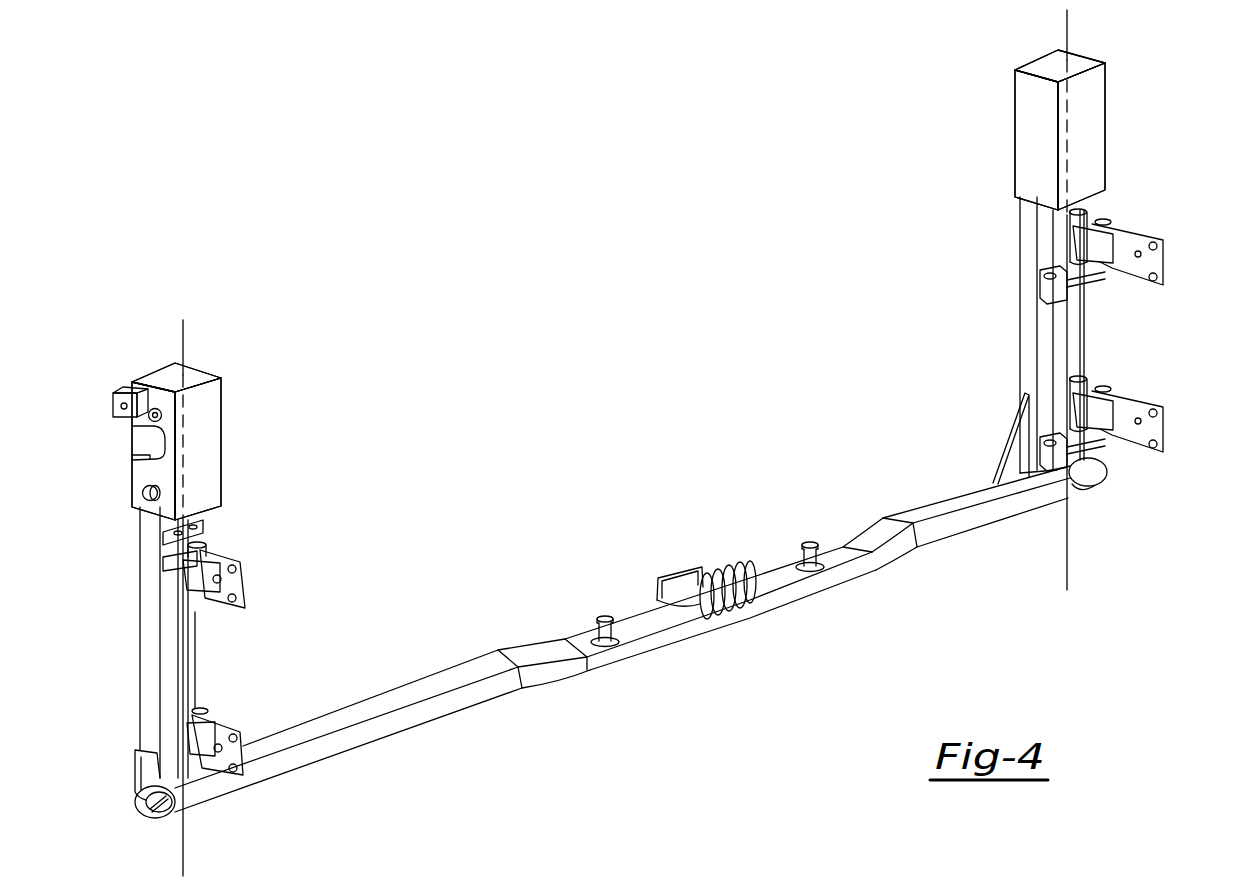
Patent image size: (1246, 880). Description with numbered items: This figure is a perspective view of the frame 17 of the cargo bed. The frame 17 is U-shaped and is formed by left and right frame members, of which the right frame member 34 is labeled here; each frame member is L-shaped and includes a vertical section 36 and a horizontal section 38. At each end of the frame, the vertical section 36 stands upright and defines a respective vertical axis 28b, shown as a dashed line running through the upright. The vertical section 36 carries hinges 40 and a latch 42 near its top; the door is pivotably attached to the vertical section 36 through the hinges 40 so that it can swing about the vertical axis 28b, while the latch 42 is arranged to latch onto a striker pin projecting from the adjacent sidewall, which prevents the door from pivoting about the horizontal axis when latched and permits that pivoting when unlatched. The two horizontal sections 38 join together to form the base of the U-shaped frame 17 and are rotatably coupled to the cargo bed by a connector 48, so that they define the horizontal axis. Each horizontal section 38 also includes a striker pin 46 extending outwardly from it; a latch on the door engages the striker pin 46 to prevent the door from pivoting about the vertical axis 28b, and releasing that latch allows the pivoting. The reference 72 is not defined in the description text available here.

The frame 17 is at (1125, 150).
The vertical axis 28b is at (187, 837).
The right frame member 34 is at (920, 268).
The vertical section 36 is at (190, 635).
The horizontal section 38 is at (540, 679).
The hinges 40 is at (233, 553).
The latch 42 is at (213, 392).
The striker pin 46 is at (603, 614).
The connector 48 is at (690, 578).
The left latch assembly 72 is at (247, 448).